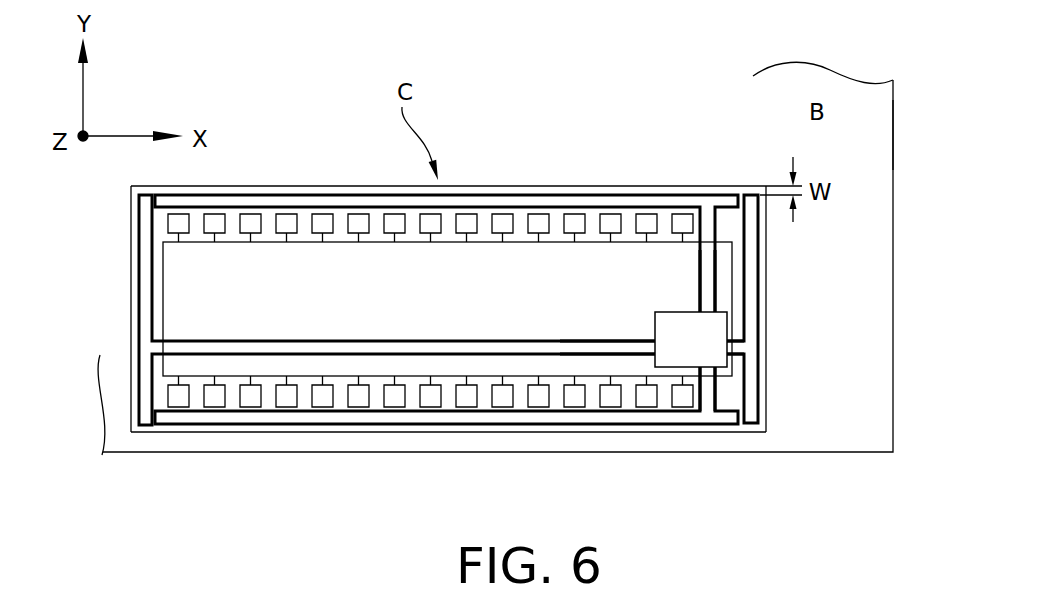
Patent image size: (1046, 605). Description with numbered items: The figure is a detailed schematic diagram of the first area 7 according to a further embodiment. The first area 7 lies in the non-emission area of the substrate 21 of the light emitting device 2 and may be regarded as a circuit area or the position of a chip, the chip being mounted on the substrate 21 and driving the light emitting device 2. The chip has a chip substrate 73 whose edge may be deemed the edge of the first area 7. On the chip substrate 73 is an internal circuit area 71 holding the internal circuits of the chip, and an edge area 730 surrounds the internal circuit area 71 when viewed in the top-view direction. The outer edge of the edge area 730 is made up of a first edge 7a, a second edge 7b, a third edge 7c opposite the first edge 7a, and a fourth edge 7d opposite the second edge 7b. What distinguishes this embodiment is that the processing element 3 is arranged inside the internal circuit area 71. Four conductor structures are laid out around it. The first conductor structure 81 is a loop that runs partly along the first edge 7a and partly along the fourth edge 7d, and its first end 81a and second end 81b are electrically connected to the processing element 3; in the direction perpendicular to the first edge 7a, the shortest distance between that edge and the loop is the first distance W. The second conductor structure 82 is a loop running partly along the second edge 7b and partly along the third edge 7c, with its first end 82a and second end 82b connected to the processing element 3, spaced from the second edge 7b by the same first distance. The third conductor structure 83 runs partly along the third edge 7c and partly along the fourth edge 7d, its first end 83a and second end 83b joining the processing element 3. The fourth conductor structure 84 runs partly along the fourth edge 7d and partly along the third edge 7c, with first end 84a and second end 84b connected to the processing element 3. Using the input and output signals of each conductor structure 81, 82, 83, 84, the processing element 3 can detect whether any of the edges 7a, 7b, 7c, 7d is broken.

The light emitting device 2 is at (893, 186).
The substrate 21 is at (855, 146).
The processing element 3 is at (656, 313).
The first area 7 is at (456, 317).
The first edge 7a is at (530, 186).
The second edge 7b is at (130, 297).
The third edge 7c is at (365, 433).
The fourth edge 7d is at (766, 246).
The internal circuit area 71 is at (180, 272).
The chip substrate 73 is at (303, 192).
The edge area 730 is at (313, 143).
The first conductor structure 81 is at (502, 202).
The first end 81a is at (700, 312).
The second end 81b is at (733, 312).
The second conductor structure 82 is at (364, 351).
The first end 82a is at (655, 341).
The second end 82b is at (645, 353).
The third conductor structure 83 is at (502, 437).
The first end 83a is at (713, 368).
The second end 83b is at (718, 368).
The fourth conductor structure 84 is at (788, 309).
The first end 84a is at (745, 341).
The second end 84b is at (745, 354).